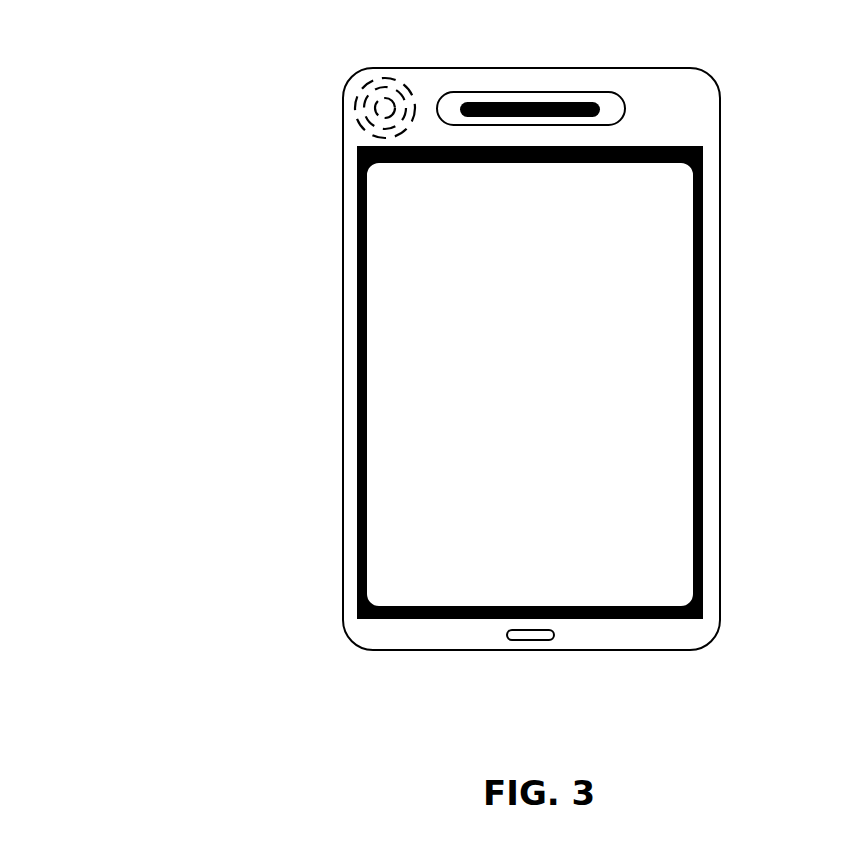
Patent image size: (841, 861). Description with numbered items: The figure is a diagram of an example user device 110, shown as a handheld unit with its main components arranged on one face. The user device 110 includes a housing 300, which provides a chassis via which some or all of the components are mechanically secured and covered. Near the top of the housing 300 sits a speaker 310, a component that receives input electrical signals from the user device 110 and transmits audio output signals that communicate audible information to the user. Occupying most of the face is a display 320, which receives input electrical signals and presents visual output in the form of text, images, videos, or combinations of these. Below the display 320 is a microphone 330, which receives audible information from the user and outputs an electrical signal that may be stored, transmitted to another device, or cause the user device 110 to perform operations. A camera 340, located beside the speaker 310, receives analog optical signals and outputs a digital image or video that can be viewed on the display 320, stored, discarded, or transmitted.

The user device 110 is at (128, 51).
The housing 300 is at (342, 358).
The speaker 310 is at (530, 92).
The display 320 is at (705, 240).
The microphone 330 is at (530, 640).
The camera 340 is at (395, 83).